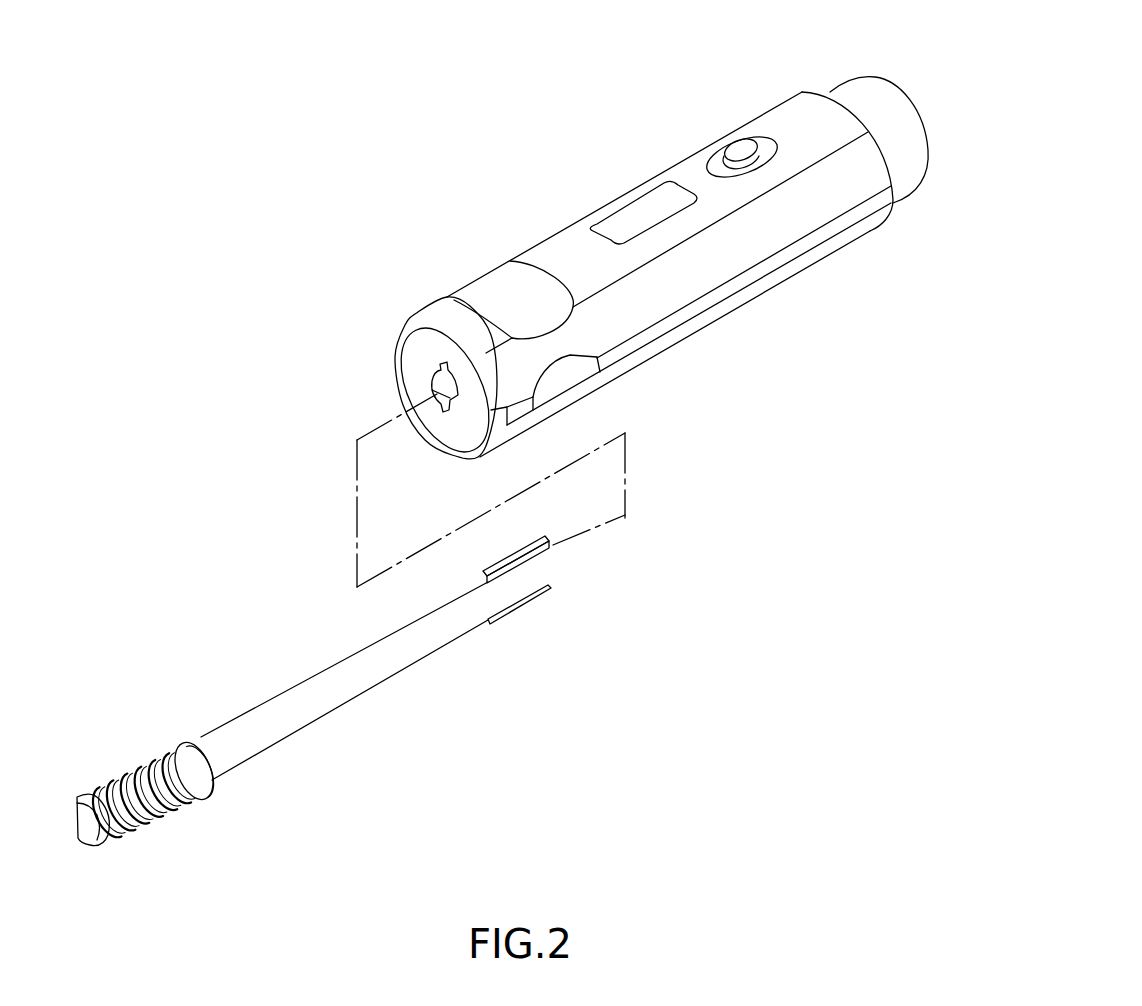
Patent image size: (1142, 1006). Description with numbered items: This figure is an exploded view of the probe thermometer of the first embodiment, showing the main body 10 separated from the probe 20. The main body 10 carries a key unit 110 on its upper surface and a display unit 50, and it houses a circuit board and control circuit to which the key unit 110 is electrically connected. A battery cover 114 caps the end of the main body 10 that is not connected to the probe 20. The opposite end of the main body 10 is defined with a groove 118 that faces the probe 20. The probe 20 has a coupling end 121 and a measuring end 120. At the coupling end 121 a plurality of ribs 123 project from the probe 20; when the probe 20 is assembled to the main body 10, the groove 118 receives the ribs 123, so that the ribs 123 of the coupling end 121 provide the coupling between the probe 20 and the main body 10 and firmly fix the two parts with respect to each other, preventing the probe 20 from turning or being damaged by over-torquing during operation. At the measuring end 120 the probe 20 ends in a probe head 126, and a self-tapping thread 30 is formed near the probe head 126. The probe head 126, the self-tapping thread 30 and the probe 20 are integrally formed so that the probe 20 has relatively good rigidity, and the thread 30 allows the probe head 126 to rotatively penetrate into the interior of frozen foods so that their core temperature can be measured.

The main body 10 is at (542, 242).
The probe 20 is at (287, 690).
The self-tapping thread 30 is at (133, 768).
The display unit 50 is at (642, 212).
The key unit 110 is at (733, 140).
The battery cover 114 is at (881, 100).
The groove 118 is at (428, 382).
The measuring end 120 is at (76, 872).
The coupling end 121 is at (514, 630).
The ribs 123 is at (520, 560).
The probe head 126 is at (96, 834).